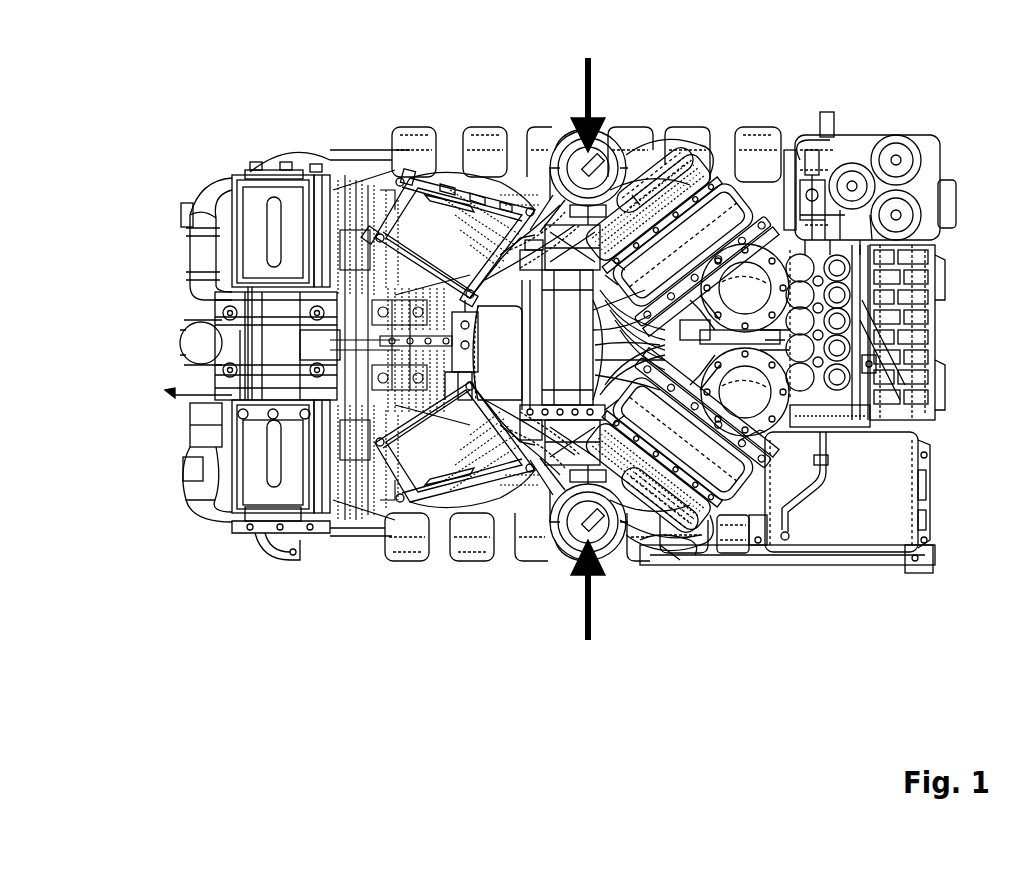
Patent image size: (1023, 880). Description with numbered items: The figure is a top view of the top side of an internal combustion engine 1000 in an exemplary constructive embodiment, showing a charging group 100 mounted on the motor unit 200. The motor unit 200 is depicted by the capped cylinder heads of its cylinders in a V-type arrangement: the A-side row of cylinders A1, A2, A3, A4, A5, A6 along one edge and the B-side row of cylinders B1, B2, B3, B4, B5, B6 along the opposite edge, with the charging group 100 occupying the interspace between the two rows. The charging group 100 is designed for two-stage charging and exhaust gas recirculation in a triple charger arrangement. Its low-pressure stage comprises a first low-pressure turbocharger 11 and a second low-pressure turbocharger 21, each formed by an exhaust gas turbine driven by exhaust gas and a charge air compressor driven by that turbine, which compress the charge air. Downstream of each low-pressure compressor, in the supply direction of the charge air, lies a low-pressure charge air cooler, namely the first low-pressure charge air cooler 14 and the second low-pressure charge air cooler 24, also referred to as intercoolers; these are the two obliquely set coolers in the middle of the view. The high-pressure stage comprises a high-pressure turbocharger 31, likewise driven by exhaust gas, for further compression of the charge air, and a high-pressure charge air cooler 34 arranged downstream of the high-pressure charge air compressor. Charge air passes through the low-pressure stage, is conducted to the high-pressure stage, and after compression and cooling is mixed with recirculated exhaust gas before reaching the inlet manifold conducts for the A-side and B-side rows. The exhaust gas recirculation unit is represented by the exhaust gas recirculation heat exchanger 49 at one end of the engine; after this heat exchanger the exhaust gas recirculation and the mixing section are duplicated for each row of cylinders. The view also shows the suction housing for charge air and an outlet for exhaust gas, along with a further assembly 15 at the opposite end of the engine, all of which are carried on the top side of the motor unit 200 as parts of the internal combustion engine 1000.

The internal combustion engine 1000 is at (271, 89).
The charging group 100 is at (612, 135).
The engine unit 200 is at (503, 600).
The first low-pressure turbocharger 11 is at (698, 195).
The second low-pressure turbocharger 21 is at (700, 540).
The first low-pressure charge air cooler 14 is at (452, 251).
The second low-pressure charge air cooler 24 is at (452, 451).
The turbocharger 15 is at (893, 152).
The high-pressure turbocharger 31 is at (510, 356).
The high-pressure charge air cooler 34 is at (268, 543).
The exhaust gas recirculation heat exchanger 49 is at (242, 196).
The cylinder A1 is at (411, 134).
The cylinder A2 is at (481, 134).
The cylinder A3 is at (538, 134).
The cylinder A4 is at (622, 134).
The cylinder A5 is at (684, 134).
The cylinder A6 is at (756, 134).
The cylinder B1 is at (398, 562).
The cylinder B2 is at (461, 562).
The cylinder B3 is at (537, 562).
The cylinder B4 is at (624, 560).
The cylinder B5 is at (676, 550).
The cylinder B6 is at (735, 545).